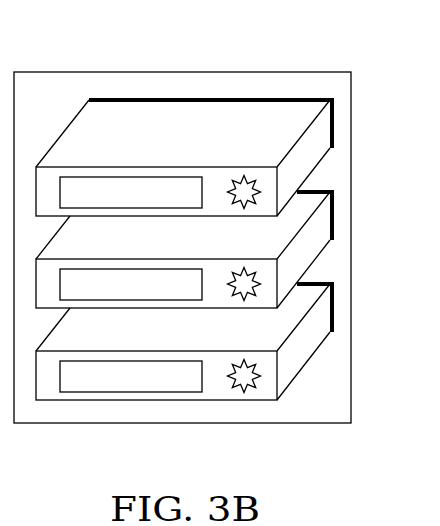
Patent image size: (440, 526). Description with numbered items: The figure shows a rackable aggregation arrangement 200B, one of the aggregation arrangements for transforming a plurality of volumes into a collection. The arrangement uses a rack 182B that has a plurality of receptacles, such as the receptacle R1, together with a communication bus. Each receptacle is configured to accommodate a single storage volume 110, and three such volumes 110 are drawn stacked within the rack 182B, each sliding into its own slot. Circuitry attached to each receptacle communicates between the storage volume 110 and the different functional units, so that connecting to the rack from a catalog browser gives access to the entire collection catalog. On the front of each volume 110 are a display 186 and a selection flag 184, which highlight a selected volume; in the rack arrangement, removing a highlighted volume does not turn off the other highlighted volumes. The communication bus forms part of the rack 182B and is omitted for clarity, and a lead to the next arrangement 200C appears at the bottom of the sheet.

The rackable aggregation arrangement 200B is at (212, 222).
The rack 182B is at (352, 289).
The storage volume 110 is at (220, 144).
The receptacle R1 is at (333, 121).
The display 186 is at (147, 206).
The selection flag 184 is at (246, 191).
The storage device arrangement 200C is at (309, 524).